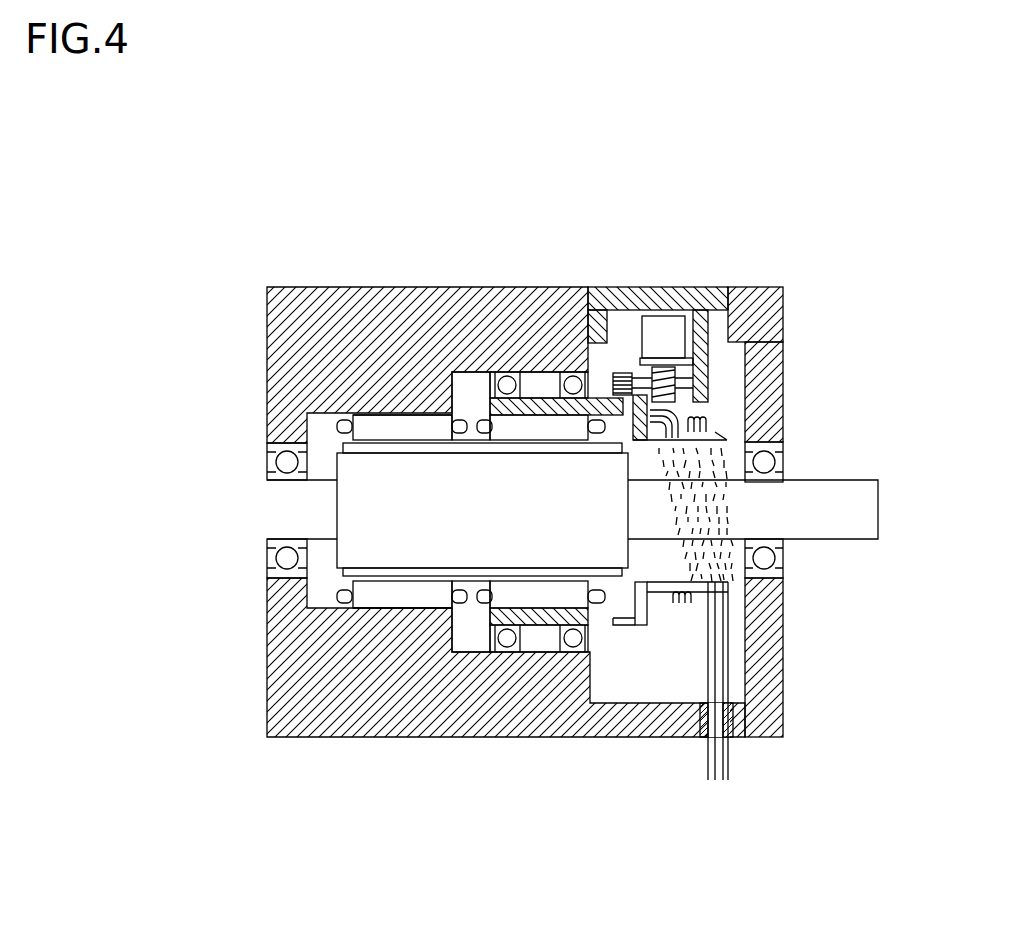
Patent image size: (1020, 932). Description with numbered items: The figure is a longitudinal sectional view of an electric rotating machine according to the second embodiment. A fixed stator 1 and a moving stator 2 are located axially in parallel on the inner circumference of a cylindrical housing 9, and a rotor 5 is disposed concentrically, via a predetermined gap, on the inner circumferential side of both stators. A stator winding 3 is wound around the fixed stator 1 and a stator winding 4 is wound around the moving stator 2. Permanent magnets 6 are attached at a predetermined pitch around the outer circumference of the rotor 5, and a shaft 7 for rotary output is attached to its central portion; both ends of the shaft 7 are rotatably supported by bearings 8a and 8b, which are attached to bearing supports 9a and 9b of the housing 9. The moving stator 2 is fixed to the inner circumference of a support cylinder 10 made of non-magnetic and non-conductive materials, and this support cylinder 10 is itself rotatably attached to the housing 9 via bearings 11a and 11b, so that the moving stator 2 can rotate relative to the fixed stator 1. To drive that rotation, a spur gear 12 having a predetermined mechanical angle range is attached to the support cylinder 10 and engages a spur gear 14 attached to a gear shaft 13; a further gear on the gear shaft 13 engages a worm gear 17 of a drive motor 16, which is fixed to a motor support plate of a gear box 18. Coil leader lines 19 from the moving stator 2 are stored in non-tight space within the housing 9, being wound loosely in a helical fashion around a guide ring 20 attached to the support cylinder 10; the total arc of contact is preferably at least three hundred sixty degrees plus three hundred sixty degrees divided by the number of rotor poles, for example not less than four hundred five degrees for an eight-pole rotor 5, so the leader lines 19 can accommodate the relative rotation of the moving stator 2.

The fixed stator 1 is at (403, 600).
The moving stator 2 is at (537, 425).
The stator winding 3 is at (343, 600).
The stator winding 4 is at (480, 418).
The rotor 5 is at (603, 545).
The permanent magnets 6 is at (403, 437).
The shaft 7 is at (845, 541).
The bearing 8a is at (764, 461).
The bearing 8b is at (283, 558).
The housing 9 is at (298, 312).
The bearing support 9a is at (768, 407).
The bearing support 9b is at (272, 392).
The support cylinder 10 is at (532, 613).
The bearing 11a is at (568, 643).
The bearing 11b is at (507, 644).
The spur gear 12 is at (625, 618).
The gear shaft 13 is at (633, 388).
The spur gear 14 is at (605, 388).
The drive motor 16 is at (663, 330).
The worm gear 17 is at (652, 362).
The gear box 18 is at (673, 375).
The coil leader lines 19 is at (720, 680).
The guide ring 20 is at (648, 607).